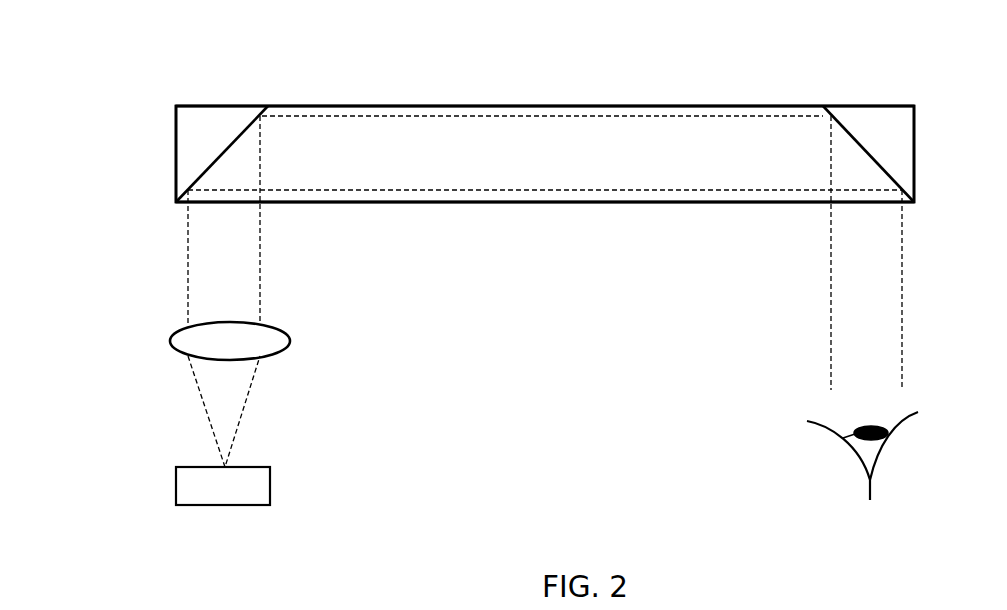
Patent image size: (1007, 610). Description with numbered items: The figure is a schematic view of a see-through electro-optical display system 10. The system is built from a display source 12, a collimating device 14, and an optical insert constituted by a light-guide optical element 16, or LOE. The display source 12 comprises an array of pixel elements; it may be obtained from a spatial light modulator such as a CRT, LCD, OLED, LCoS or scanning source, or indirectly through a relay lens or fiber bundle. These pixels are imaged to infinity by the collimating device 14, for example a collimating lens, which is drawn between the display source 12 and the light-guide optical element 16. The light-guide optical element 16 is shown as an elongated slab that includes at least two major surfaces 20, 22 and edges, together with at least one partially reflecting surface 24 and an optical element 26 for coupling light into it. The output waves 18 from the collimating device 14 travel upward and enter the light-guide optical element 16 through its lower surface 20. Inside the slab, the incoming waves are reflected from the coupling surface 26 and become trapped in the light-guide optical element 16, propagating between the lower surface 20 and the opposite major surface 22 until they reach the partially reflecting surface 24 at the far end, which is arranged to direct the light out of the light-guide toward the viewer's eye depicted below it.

The see-through display system 10 is at (172, 92).
The display source 12 is at (270, 495).
The collimating device 14 is at (282, 327).
The light-guide optical element 16 is at (653, 93).
The output waves 18 is at (185, 250).
The lower surface 20 is at (529, 203).
The major surface 22 is at (358, 105).
The partially reflecting surface 24 is at (856, 142).
The optical element for coupling light 26 is at (228, 145).